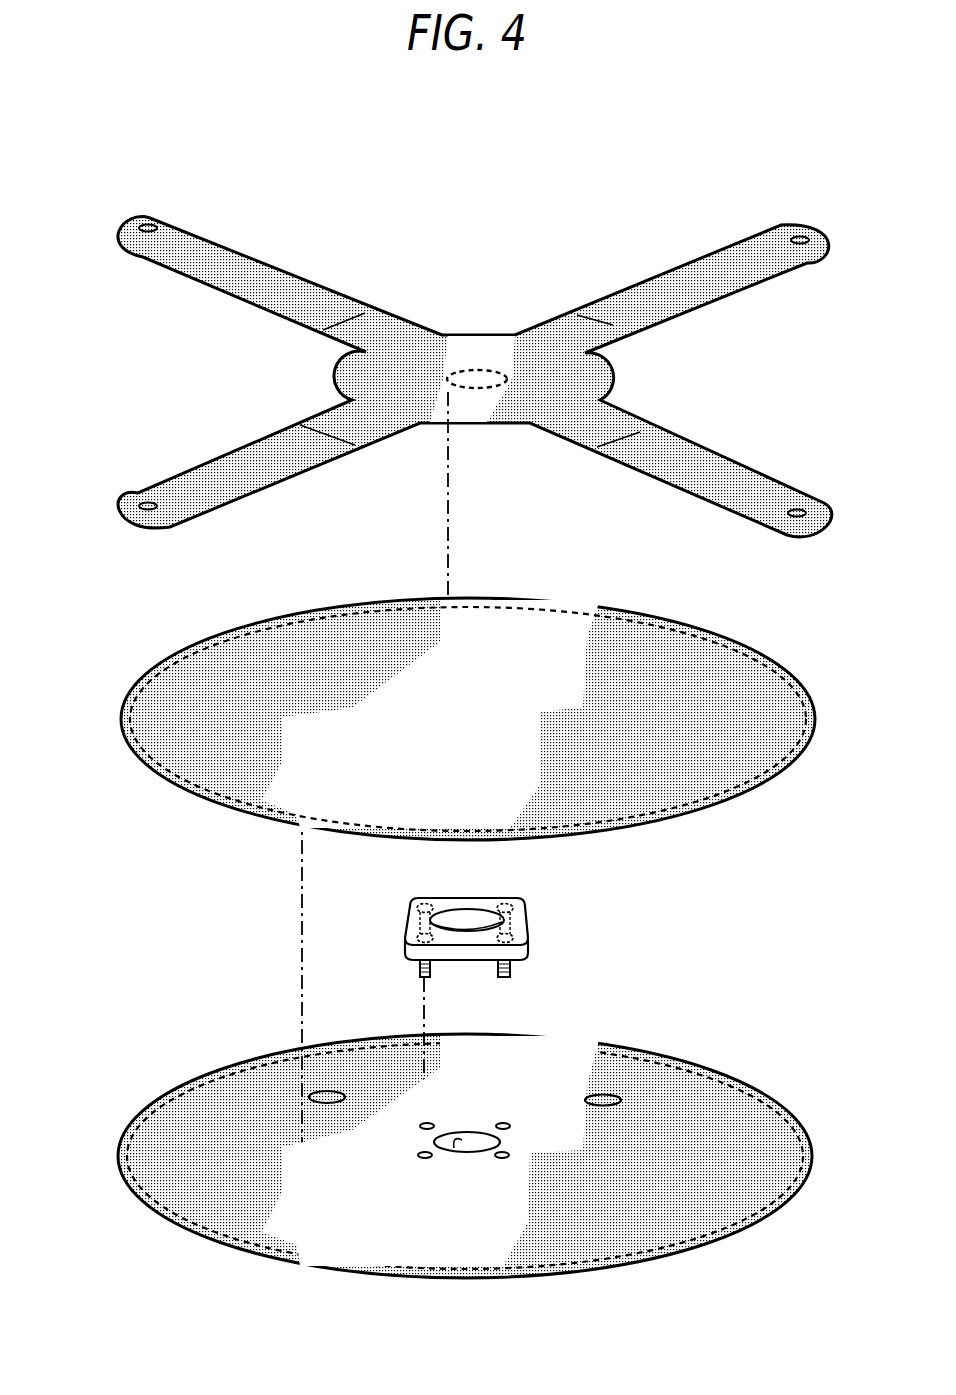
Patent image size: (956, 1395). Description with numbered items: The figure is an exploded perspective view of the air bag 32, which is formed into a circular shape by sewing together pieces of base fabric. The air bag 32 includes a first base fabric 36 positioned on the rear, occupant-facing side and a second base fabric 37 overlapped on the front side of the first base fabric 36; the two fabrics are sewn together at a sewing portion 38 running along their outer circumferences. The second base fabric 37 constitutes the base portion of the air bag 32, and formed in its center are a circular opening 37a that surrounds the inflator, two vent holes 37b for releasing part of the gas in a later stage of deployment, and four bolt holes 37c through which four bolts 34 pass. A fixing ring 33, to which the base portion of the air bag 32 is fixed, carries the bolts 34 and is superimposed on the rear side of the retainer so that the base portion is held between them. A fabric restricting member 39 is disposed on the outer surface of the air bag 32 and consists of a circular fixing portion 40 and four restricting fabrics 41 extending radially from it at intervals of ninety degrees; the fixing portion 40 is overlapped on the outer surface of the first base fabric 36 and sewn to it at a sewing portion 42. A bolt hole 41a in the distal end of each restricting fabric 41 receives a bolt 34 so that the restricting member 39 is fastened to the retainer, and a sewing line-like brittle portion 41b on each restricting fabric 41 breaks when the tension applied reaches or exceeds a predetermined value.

The air bag 32 is at (185, 890).
The fixing ring 33 is at (487, 897).
The bolts 34 is at (422, 968).
The first base fabric 36 is at (674, 823).
The second base fabric 37 is at (628, 1044).
The circular opening 37a is at (458, 1143).
The vent holes 37b is at (315, 1097).
The bolt holes 37c is at (505, 1152).
The sewing portion 38 is at (583, 608).
The fabric restricting member 39 is at (487, 328).
The fixing portion 40 is at (475, 408).
The restricting fabrics 41 is at (243, 258).
The bolt hole 41a is at (147, 226).
The brittle portion 41b is at (360, 315).
The sewing portion 42 is at (468, 367).